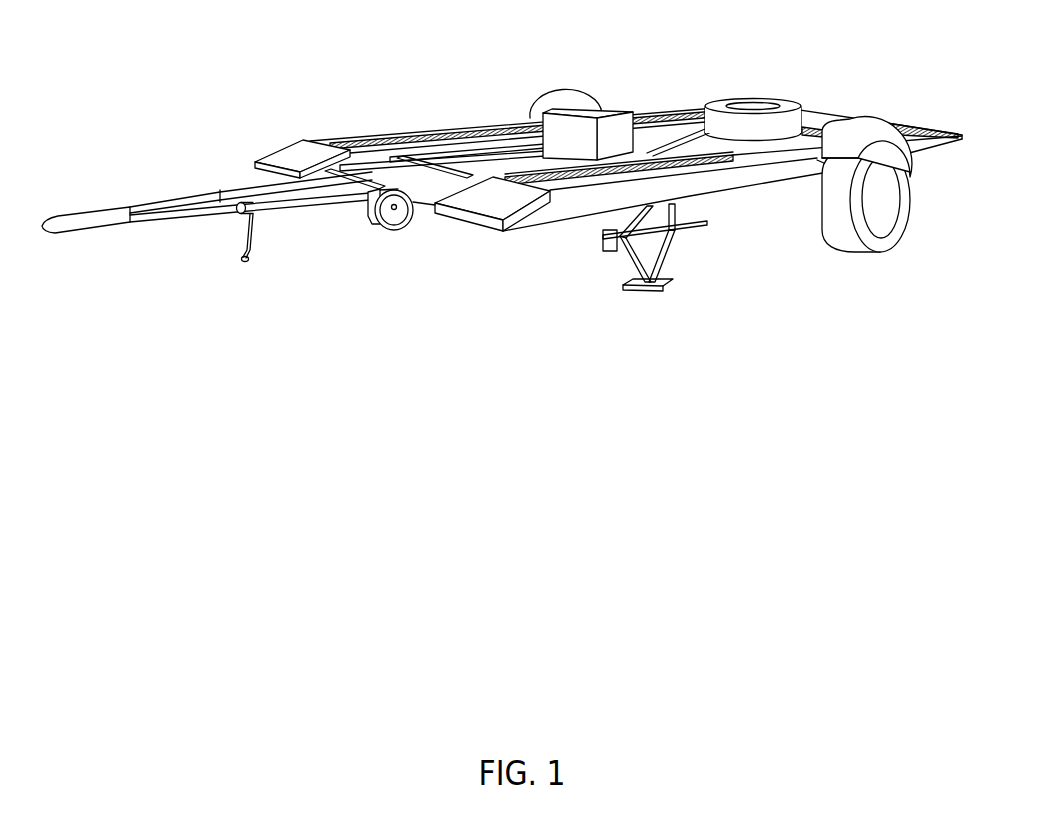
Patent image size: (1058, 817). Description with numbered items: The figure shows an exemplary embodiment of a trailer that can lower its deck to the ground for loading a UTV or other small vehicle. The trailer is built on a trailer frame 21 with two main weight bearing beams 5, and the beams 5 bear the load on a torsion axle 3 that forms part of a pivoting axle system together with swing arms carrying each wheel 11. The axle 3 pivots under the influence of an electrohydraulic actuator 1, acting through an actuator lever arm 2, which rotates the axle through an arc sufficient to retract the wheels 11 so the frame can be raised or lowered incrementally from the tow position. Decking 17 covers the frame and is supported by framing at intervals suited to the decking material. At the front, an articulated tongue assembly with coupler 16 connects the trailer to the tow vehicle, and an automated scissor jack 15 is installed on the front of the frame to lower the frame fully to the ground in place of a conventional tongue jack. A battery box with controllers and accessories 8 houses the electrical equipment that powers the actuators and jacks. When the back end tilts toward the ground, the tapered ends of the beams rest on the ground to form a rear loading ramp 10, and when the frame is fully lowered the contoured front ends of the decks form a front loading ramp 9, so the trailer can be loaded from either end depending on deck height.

The electrohydraulic actuator 1 is at (653, 150).
The actuator lever arm 2 is at (705, 107).
The torsion axle 3 is at (660, 148).
The beam 5 is at (790, 170).
The battery box with controllers and accessories 8 is at (572, 133).
The front loading ramp 9 is at (545, 192).
The rear loading ramp 10 is at (935, 150).
The wheel 11 is at (880, 200).
The automated scissor jack 15 is at (632, 250).
The articulated tongue assembly with coupler 16 is at (307, 188).
The decking 17 is at (722, 165).
The trailer frame 21 is at (470, 215).